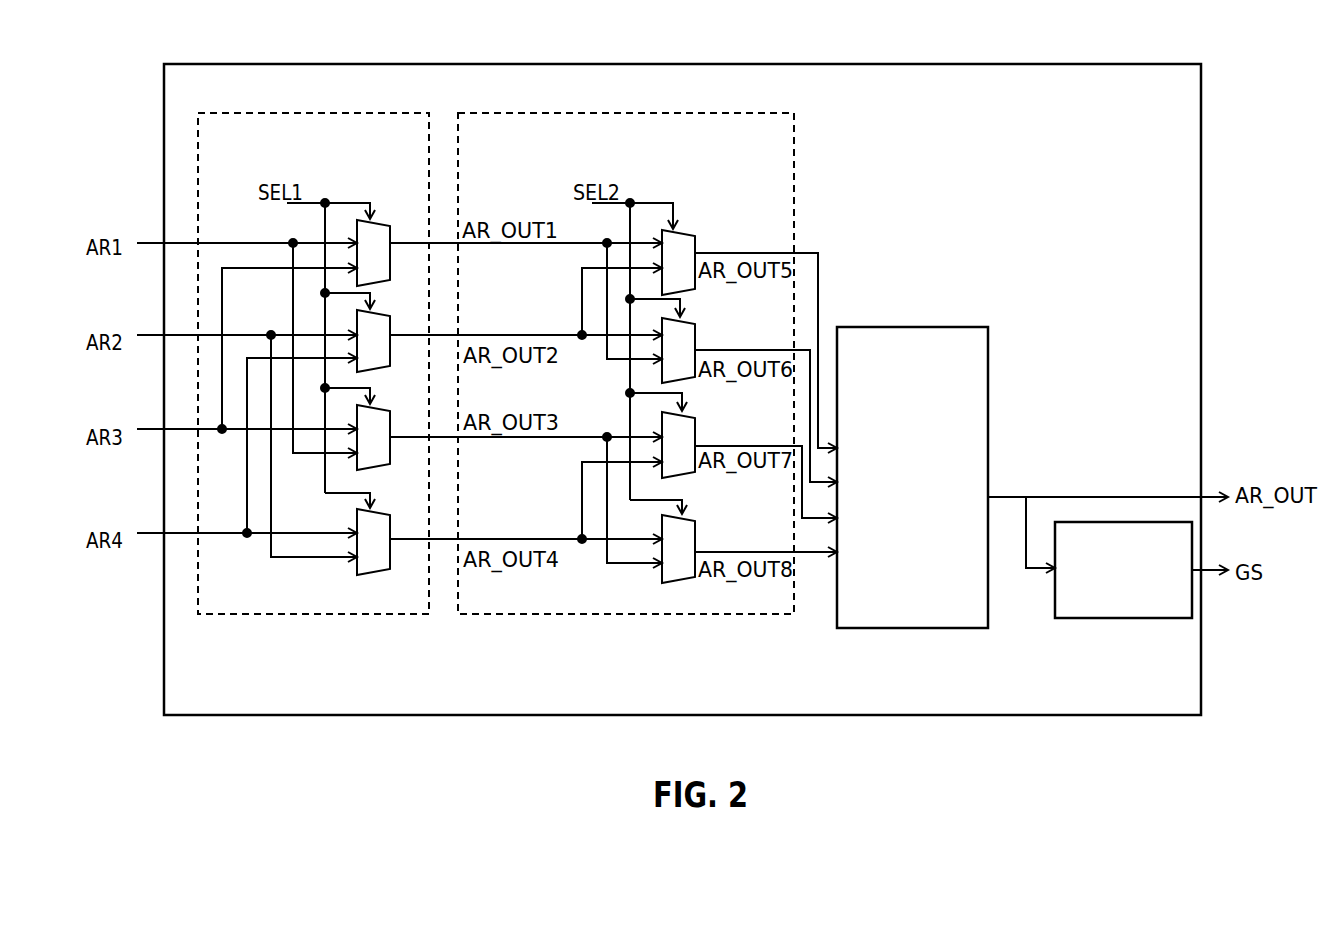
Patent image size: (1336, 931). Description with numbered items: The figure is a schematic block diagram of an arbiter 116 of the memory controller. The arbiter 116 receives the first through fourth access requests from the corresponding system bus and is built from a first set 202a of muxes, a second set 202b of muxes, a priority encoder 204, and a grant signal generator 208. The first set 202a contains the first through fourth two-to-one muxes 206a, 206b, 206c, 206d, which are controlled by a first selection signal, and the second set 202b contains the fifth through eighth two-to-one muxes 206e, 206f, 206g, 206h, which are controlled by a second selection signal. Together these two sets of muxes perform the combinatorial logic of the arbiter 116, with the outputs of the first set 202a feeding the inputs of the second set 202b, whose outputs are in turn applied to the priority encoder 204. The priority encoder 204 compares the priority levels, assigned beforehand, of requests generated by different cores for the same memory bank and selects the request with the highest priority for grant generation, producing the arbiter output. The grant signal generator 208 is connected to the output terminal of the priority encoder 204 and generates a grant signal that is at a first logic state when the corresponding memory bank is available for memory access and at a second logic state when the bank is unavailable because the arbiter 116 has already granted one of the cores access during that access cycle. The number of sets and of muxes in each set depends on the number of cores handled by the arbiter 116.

The arbiter 116 is at (1160, 110).
The first set of muxes 202a is at (425, 147).
The second set of muxes 202b is at (778, 156).
The priority encoder 204 is at (977, 371).
The first 2:1 mux 206a is at (408, 221).
The second 2:1 mux 206b is at (408, 311).
The third 2:1 mux 206c is at (408, 406).
The fourth 2:1 mux 206d is at (408, 511).
The fifth 2:1 mux 206e is at (695, 233).
The sixth 2:1 mux 206f is at (728, 322).
The seventh 2:1 mux 206g is at (713, 415).
The eighth 2:1 mux 206h is at (713, 518).
The grant signal generator 208 is at (1080, 618).